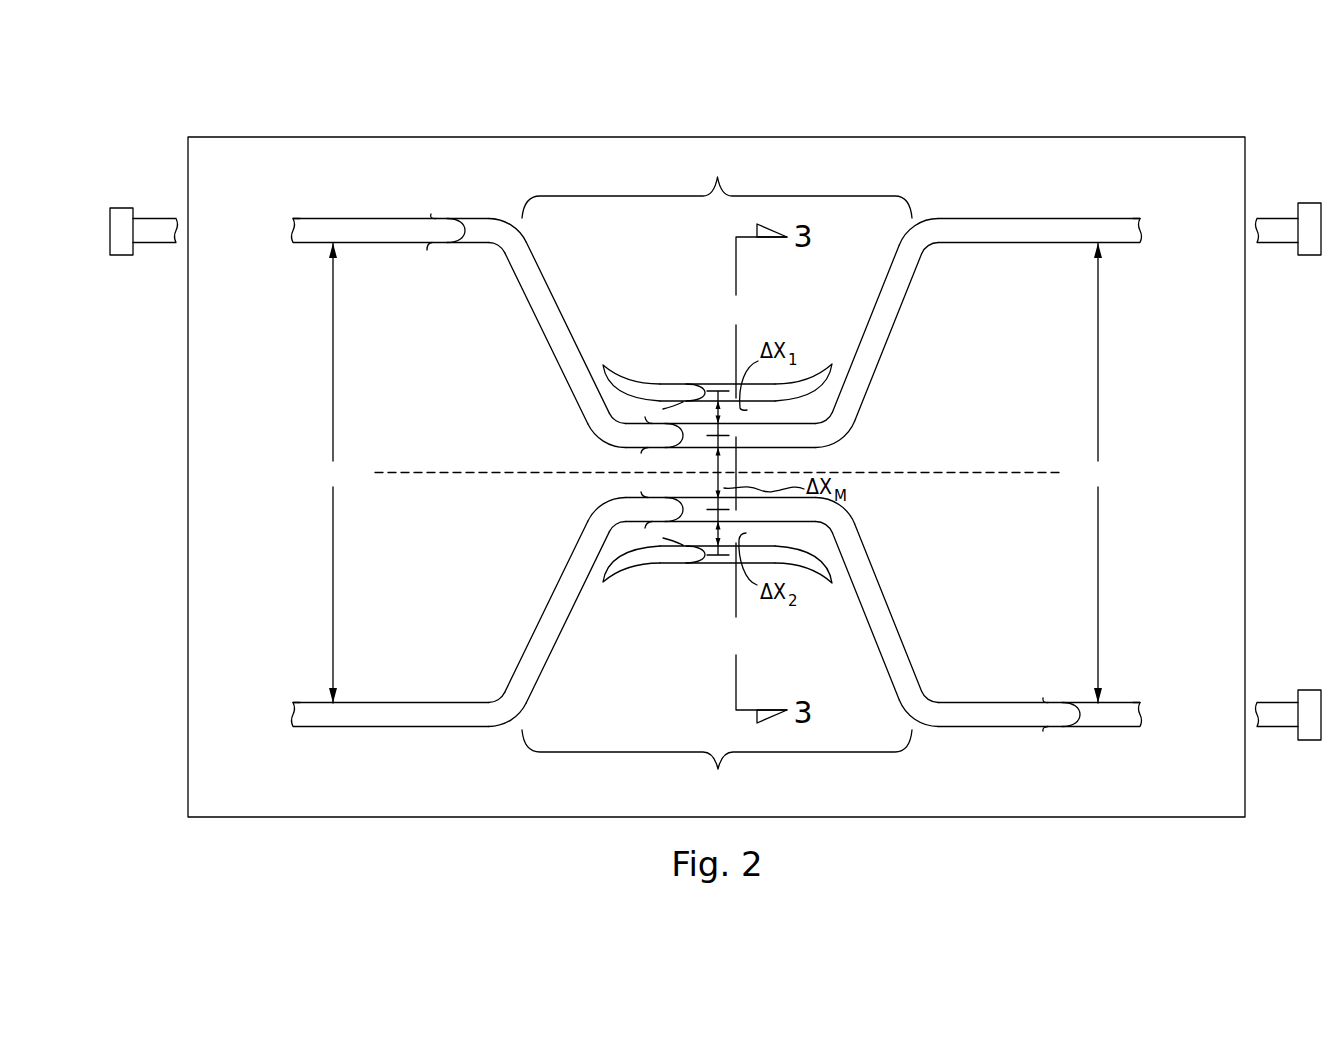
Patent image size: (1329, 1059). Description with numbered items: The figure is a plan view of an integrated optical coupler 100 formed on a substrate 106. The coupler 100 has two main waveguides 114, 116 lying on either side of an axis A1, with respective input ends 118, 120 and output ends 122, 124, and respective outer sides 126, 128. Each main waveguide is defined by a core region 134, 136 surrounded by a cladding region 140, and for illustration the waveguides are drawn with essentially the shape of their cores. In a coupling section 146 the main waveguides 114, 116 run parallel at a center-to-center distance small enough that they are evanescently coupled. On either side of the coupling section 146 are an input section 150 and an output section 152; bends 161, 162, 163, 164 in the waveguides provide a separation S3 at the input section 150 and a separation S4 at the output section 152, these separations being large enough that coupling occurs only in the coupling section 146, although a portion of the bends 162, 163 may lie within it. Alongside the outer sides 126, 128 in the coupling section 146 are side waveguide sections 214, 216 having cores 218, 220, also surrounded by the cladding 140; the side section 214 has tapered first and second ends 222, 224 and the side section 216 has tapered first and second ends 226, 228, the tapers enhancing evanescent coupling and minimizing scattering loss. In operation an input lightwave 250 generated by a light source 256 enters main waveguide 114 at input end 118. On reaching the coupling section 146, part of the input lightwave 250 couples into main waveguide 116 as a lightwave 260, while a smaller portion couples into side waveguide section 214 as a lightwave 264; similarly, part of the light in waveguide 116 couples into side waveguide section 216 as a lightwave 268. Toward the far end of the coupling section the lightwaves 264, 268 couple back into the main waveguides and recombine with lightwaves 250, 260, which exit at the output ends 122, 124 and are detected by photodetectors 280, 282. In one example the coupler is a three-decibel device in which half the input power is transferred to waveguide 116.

The integrated optical coupler 100 is at (738, 427).
The substrate 106 is at (1246, 472).
The main waveguide 114 is at (719, 308).
The main waveguide 116 is at (719, 645).
The input end 118 is at (310, 243).
The input end 120 is at (309, 702).
The output end 122 is at (1131, 243).
The output end 124 is at (1129, 702).
The outer side 126 is at (754, 416).
The outer side 128 is at (754, 529).
The core region 134 is at (548, 285).
The core region 136 is at (549, 598).
The cladding region 140 is at (716, 147).
The coupling section 146 is at (717, 765).
The input section 150 is at (258, 186).
The output section 152 is at (1175, 186).
The bend 161 is at (486, 276).
The bend 162 is at (548, 430).
The bend 163 is at (885, 430).
The bend 164 is at (946, 272).
The side waveguide section 214 is at (717, 353).
The side waveguide section 216 is at (718, 596).
The core 218 is at (652, 383).
The core 220 is at (652, 564).
The first end 222 is at (605, 364).
The second end 224 is at (830, 364).
The first end 226 is at (605, 584).
The second end 228 is at (831, 585).
The input lightwave 250 is at (431, 214).
The lightwave 260 is at (642, 498).
The lightwave 264 is at (663, 377).
The lightwave 268 is at (663, 570).
The light source 256 is at (121, 208).
The photodetector 280 is at (1310, 203).
The photodetector 282 is at (1309, 690).
The separation S3 is at (333, 473).
The separation S4 is at (1098, 473).
The axis A1 is at (1000, 469).